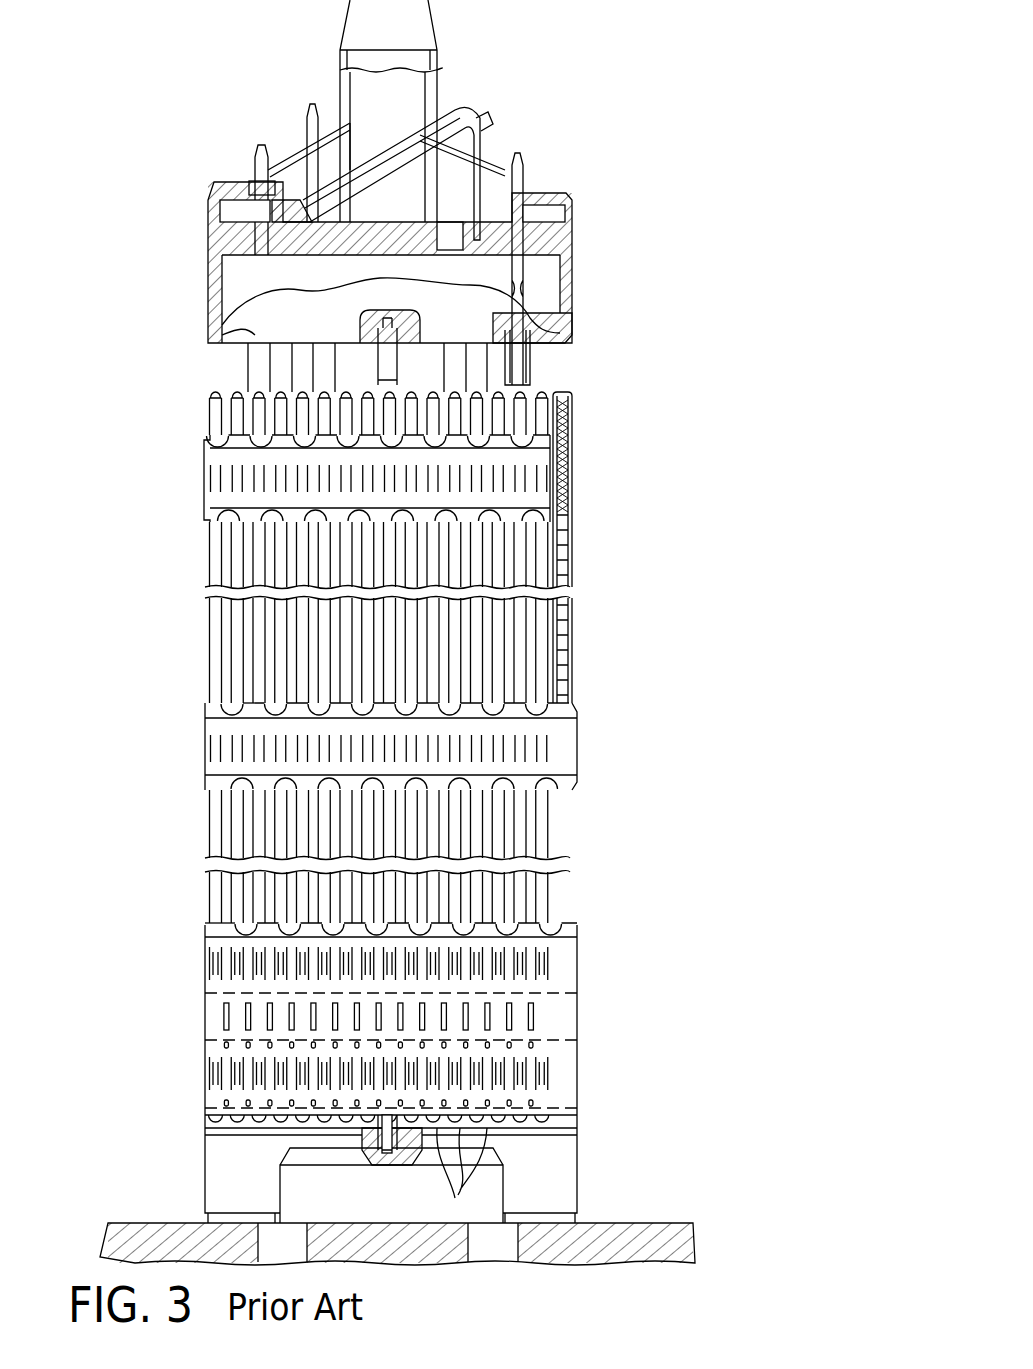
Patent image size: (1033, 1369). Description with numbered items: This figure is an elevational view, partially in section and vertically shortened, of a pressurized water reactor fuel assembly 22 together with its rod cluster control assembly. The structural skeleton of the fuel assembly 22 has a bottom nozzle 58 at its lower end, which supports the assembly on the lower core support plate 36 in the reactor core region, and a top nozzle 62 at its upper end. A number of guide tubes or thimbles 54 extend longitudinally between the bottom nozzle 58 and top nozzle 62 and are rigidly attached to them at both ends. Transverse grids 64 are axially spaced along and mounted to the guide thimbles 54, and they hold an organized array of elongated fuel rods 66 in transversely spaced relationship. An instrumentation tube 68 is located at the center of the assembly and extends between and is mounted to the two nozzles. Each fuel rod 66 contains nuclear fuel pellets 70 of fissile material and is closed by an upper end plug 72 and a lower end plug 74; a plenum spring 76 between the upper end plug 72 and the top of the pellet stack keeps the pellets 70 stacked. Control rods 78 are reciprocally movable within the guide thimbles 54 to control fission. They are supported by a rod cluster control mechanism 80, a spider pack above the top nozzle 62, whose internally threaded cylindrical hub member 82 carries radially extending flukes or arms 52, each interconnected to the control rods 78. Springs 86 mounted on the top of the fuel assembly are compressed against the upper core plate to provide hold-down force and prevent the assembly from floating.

The fuel assembly 22 is at (655, 252).
The lower core support plate 36 is at (613, 1225).
The radially extending flukes or arms 52 is at (290, 157).
The guide tubes or thimbles 54 is at (250, 374).
The bottom nozzle 58 is at (583, 1170).
The top nozzle 62 is at (573, 239).
The transverse grids 64 is at (208, 488).
The fuel rods 66 is at (208, 660).
The instrumentation tube 68 is at (397, 1165).
The nuclear fuel pellets 70 is at (570, 560).
The upper end plug 72 is at (573, 398).
The lower end plug 74 is at (465, 1168).
The plenum spring 76 is at (573, 464).
The control rods 78 is at (577, 311).
The rod cluster control mechanism 80 is at (480, 102).
The cylindrical hub member 82 is at (438, 90).
The springs 86 is at (482, 153).